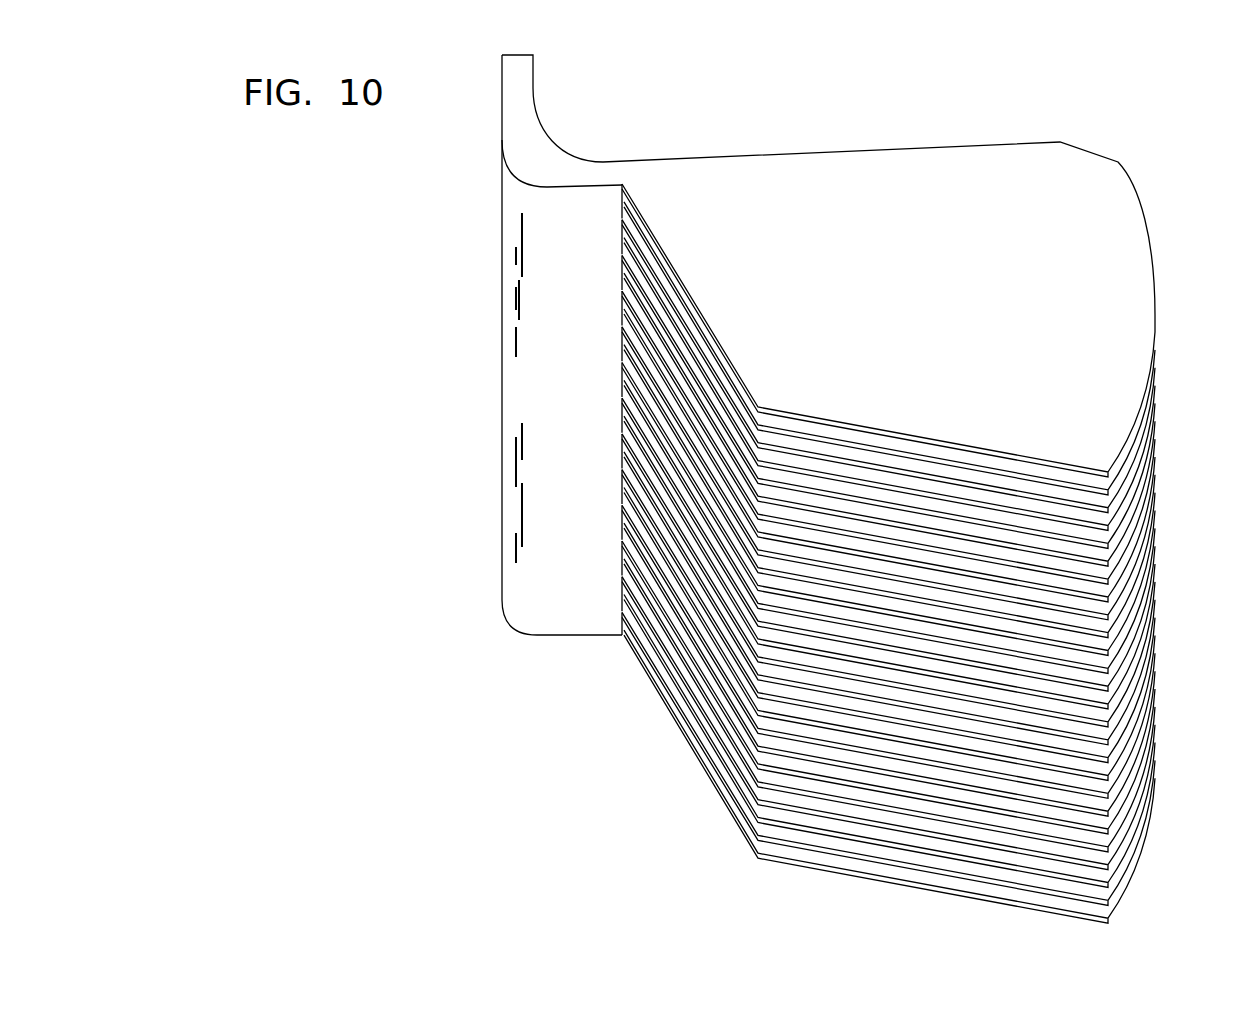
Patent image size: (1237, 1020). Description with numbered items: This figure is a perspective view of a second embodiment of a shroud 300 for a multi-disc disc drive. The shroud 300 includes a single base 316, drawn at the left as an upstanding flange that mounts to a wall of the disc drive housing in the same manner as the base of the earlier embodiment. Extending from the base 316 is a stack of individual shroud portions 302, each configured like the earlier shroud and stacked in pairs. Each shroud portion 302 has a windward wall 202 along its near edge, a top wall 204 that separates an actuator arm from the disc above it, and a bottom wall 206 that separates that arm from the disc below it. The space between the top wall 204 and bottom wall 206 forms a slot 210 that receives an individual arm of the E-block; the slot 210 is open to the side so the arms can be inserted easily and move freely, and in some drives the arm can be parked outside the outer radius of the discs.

The shroud 300 is at (440, 300).
The base 316 is at (534, 76).
The windward wall 202 is at (620, 188).
The top wall 204 is at (950, 478).
The bottom wall 206 is at (1060, 513).
The slot 210 is at (838, 473).
The shroud portions 302 is at (1122, 473).